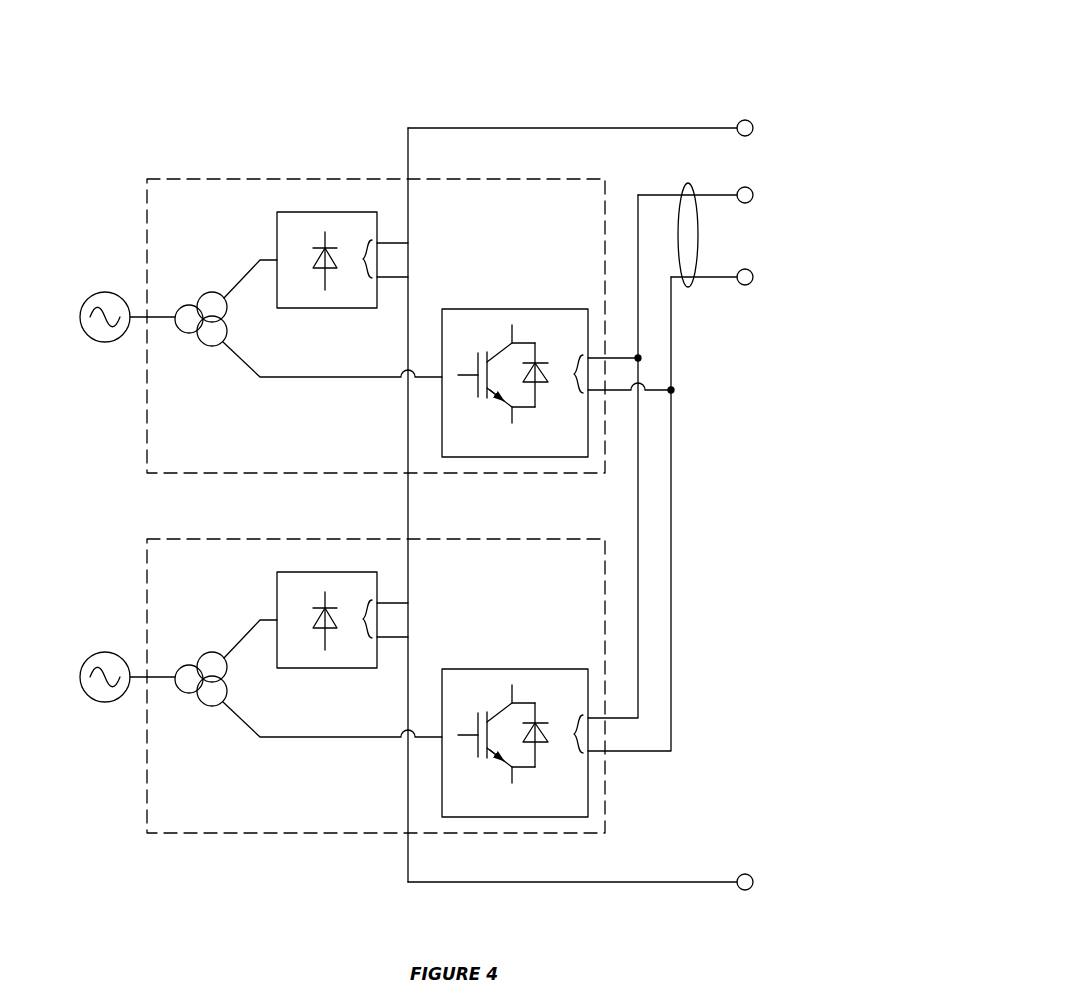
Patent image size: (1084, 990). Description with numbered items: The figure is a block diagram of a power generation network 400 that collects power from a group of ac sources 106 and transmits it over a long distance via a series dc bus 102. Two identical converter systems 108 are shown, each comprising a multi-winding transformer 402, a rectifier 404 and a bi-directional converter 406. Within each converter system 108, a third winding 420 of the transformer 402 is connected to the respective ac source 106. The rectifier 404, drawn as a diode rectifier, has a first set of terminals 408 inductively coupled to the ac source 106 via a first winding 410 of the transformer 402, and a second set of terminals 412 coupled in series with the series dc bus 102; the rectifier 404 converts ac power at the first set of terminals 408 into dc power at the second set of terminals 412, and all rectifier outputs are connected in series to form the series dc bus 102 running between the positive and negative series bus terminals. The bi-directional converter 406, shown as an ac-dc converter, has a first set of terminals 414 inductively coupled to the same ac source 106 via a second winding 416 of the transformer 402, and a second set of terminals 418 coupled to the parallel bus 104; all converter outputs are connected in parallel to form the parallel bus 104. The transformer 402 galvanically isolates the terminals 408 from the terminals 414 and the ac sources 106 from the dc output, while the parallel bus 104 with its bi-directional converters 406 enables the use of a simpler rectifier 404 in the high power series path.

The power generation network 400 is at (324, 58).
The series dc bus 102 is at (670, 128).
The parallel bus 104 is at (686, 286).
The ac source 106 is at (103, 342).
The converter system 108 is at (515, 178).
The multi-winding transformer 402 is at (302, 466).
The rectifier 404 is at (342, 427).
The bi-directional converter 406 is at (515, 550).
The first set of terminals of the rectifier 408 is at (283, 261).
The first winding 410 is at (213, 292).
The second set of terminals of the rectifier 412 is at (361, 267).
The first set of terminals of the bi-directional converter 414 is at (446, 373).
The second winding 416 is at (228, 342).
The second set of terminals of the bi-directional converter 418 is at (571, 383).
The third winding 420 is at (189, 304).